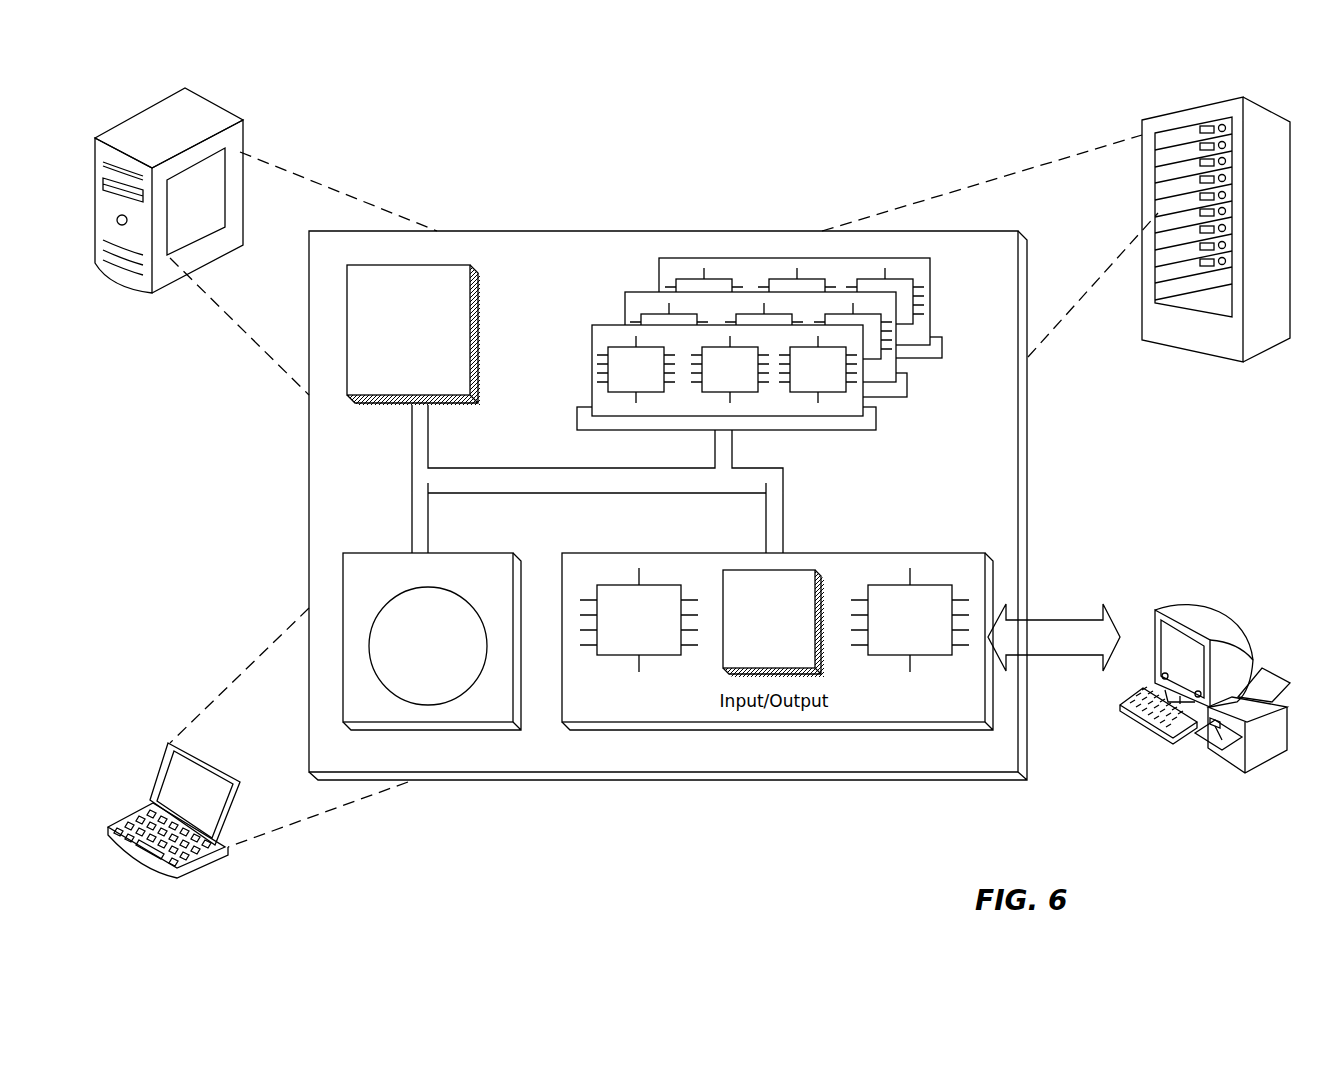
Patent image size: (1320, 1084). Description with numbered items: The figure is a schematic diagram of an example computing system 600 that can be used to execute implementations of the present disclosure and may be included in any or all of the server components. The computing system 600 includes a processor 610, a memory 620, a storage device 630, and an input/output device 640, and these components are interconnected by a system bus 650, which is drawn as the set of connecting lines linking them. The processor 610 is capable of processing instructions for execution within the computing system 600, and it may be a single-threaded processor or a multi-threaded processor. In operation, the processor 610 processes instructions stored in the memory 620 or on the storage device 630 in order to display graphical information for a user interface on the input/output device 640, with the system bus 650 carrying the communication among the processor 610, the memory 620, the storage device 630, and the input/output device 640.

The computing system 600 is at (496, 150).
The processor 610 is at (413, 335).
The memory 620 is at (935, 395).
The storage device 630 is at (432, 641).
The input/output device 640 is at (1155, 612).
The system bus 650 is at (592, 484).